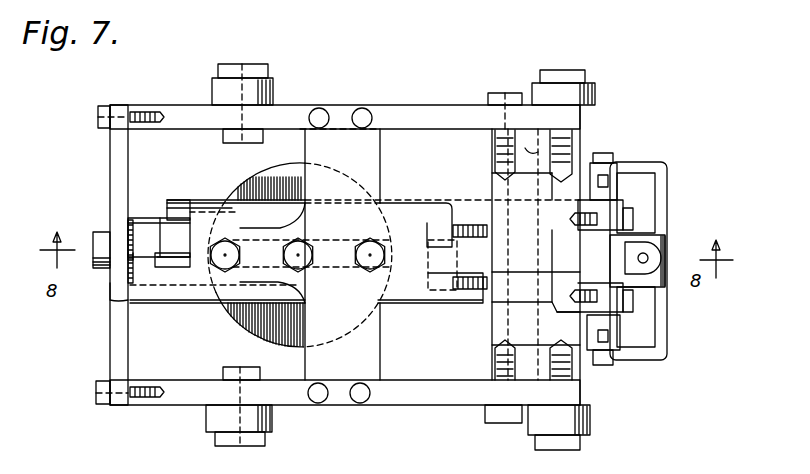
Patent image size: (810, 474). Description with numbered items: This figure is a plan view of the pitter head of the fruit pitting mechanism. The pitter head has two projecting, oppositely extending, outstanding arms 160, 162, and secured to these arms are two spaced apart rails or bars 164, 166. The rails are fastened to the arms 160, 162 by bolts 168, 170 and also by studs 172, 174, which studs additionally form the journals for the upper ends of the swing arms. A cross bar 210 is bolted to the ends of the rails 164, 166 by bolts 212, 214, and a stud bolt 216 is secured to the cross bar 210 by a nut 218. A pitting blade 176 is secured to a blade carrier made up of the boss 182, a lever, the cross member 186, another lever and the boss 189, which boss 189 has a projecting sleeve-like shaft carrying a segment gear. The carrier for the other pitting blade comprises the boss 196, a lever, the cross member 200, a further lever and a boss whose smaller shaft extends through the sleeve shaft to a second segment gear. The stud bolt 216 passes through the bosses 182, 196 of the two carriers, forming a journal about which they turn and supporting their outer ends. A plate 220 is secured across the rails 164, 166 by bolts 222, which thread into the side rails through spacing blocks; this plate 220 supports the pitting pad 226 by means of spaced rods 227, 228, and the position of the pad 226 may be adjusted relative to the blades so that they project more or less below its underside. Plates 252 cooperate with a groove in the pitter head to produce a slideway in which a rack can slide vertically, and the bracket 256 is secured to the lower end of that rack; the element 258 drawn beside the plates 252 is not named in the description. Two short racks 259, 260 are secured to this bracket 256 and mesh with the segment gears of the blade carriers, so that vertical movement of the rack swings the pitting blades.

The outstanding arm 160 is at (530, 358).
The outstanding arm 162 is at (532, 150).
The rail 164 is at (442, 398).
The rail 166 is at (418, 114).
The bolt 168 is at (505, 425).
The bolt 170 is at (500, 93).
The stud 172 is at (567, 446).
The stud 174 is at (565, 74).
The pitting blade 176 is at (318, 272).
The boss 182 is at (158, 220).
The cross member 186 is at (125, 300).
The boss 189 is at (463, 226).
The boss 196 is at (193, 250).
The cross member 200 is at (410, 213).
The cross bar 210 is at (108, 347).
The bolt 212 is at (96, 396).
The bolt 214 is at (100, 128).
The stud bolt 216 is at (137, 236).
The nut 218 is at (103, 232).
The plate 220 is at (380, 350).
The bolt 222 is at (362, 106).
The pitting pad 226 is at (375, 175).
The rod 227 is at (228, 272).
The rod 228 is at (378, 270).
The plate 252 is at (608, 208).
The bracket 256 is at (667, 182).
The nut 258 is at (633, 220).
The short rack 259 is at (612, 332).
The short rack 260 is at (617, 185).